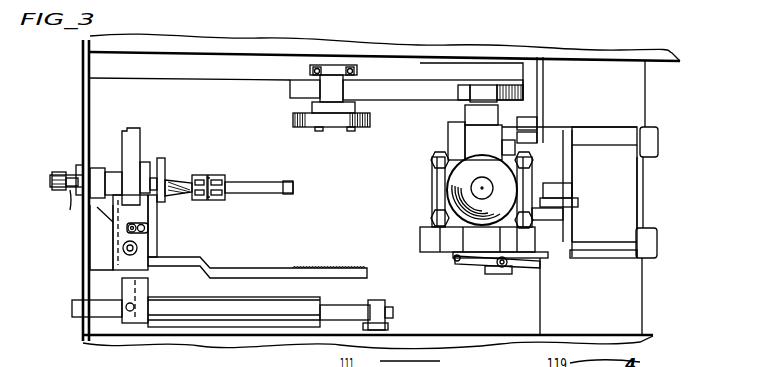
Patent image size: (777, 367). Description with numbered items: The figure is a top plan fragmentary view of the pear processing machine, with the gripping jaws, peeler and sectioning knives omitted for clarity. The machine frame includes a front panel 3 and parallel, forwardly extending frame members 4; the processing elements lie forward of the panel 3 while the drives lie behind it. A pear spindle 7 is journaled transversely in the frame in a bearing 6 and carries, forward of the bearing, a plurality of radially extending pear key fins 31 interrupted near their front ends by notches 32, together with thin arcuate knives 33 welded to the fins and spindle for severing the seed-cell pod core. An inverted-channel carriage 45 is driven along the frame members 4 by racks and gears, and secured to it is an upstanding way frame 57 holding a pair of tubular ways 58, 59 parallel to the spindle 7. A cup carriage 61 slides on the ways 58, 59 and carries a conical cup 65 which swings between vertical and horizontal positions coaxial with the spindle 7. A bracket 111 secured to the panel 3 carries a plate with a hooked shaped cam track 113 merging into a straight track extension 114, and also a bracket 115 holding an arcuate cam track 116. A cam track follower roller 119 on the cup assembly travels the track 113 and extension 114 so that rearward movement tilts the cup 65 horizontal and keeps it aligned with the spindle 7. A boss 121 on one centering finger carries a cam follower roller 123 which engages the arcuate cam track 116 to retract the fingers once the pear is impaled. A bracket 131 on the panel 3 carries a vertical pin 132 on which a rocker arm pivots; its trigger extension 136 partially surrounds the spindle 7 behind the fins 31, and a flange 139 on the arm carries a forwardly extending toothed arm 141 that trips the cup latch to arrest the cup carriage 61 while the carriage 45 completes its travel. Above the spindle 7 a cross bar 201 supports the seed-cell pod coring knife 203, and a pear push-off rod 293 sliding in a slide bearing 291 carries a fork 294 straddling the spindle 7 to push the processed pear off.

The front panel 3 is at (83, 107).
The frame members 4 is at (83, 51).
The bearing 6 is at (98, 168).
The spindle 7 is at (289, 181).
The pear key fins 31 is at (213, 196).
The notches 32 is at (211, 176).
The arcuate knife 33 is at (224, 178).
The carriage 45 is at (600, 311).
The way frame 57 is at (645, 179).
The way 58 is at (585, 241).
The way 59 is at (611, 144).
The cup carriage 61 is at (577, 176).
The conical cup 65 is at (490, 222).
The bracket 111 is at (258, 80).
The hooked shaped cam track 113 is at (472, 70).
The track extension 114 is at (428, 68).
The bracket 115 is at (310, 112).
The arcuate cam track 116 is at (368, 124).
The cam track follower roller 119 is at (498, 75).
The boss 121 is at (537, 137).
The cam follower roller 123 is at (537, 122).
The bracket 131 is at (108, 250).
The pin 132 is at (140, 246).
The trip extension 136 is at (192, 192).
The flange 139 is at (163, 277).
The arm 141 is at (240, 268).
The cross bar 201 is at (130, 128).
The seed-cell pod coring knife 203 is at (168, 178).
The slide bearing 291 is at (70, 210).
The pear push-off rod 293 is at (55, 188).
The fork 294 is at (163, 160).